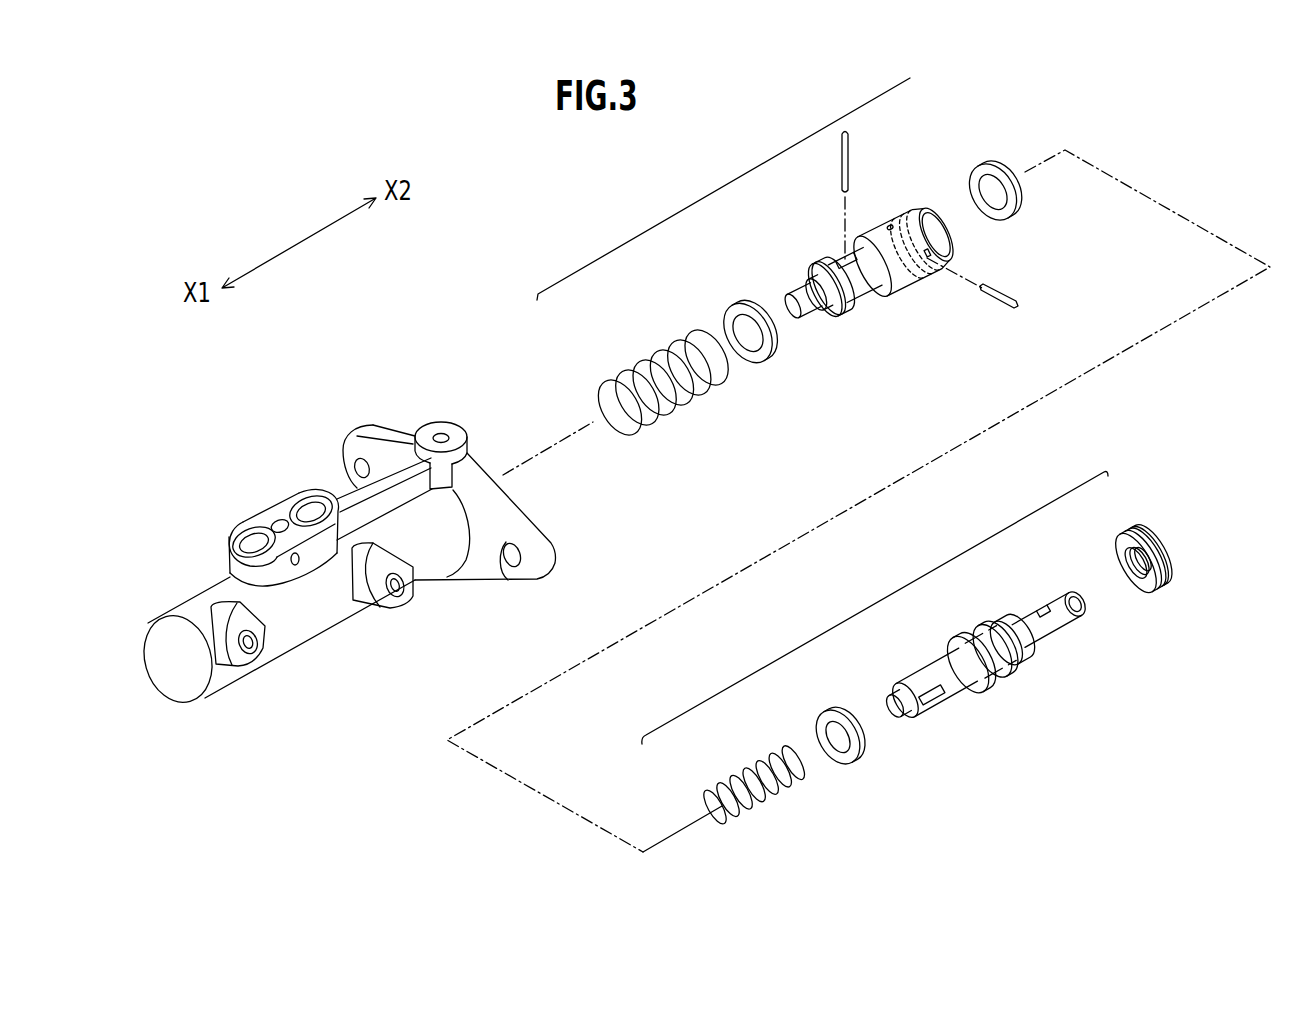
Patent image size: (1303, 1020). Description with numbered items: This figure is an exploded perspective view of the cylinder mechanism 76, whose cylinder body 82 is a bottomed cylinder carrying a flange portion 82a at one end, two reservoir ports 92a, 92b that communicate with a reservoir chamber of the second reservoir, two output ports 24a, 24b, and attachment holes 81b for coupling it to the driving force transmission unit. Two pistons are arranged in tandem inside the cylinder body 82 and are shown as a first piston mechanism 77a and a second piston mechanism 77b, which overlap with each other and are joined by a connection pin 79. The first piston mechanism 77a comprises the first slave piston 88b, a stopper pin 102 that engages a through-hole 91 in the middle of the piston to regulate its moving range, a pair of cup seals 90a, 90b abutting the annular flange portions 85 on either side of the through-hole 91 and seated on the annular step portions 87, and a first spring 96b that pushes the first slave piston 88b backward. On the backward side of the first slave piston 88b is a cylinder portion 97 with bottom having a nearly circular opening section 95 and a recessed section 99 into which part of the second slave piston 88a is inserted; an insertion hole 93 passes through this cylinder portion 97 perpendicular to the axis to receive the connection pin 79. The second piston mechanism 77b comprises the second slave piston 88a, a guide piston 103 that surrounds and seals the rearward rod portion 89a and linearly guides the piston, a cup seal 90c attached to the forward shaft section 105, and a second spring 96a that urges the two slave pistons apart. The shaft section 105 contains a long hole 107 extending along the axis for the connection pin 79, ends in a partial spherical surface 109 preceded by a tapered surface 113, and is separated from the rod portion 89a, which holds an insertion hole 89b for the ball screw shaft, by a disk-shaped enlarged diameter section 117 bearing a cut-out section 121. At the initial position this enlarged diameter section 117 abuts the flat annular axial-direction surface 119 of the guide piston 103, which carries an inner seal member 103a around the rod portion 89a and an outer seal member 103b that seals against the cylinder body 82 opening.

The output port 24a is at (400, 590).
The output port 24b is at (244, 640).
The cylinder mechanism 76 is at (244, 718).
The first piston mechanism 77a is at (727, 187).
The second piston mechanism 77b is at (866, 607).
The connection pin 79 is at (1019, 300).
The attachment hole 81b is at (362, 437).
The cylinder body 82 is at (313, 620).
The flange portion 82a is at (550, 546).
The annular flange portion 85 is at (903, 251).
The annular step portion 87 is at (832, 286).
The second slave piston 88a is at (1073, 638).
The first slave piston 88b is at (864, 282).
The rod portion 89a is at (1050, 617).
The insertion hole 89b is at (1044, 611).
The cup seal 90a is at (1016, 205).
The cup seal 90b is at (767, 357).
The cup seal 90c is at (851, 764).
The through-hole 91 is at (855, 274).
The reservoir port 92a is at (313, 503).
The reservoir port 92b is at (253, 540).
The insertion hole 93 is at (927, 253).
The opening section 95 is at (919, 242).
The second spring 96a is at (773, 792).
The first spring 96b is at (687, 408).
The cylinder portion with bottom 97 is at (890, 227).
The recessed section 99 is at (908, 248).
The stopper pin 102 is at (840, 177).
The guide piston 103 is at (1139, 518).
The seal member 103a is at (1139, 561).
The seal member 103b is at (1149, 555).
The shaft section 105 is at (971, 663).
The long hole 107 is at (932, 695).
The partial spherical surface 109 is at (897, 705).
The tapered surface 113 is at (932, 684).
The enlarged diameter section 117 is at (995, 649).
The axial-direction surface 119 is at (1147, 529).
The cut-out section 121 is at (1013, 639).